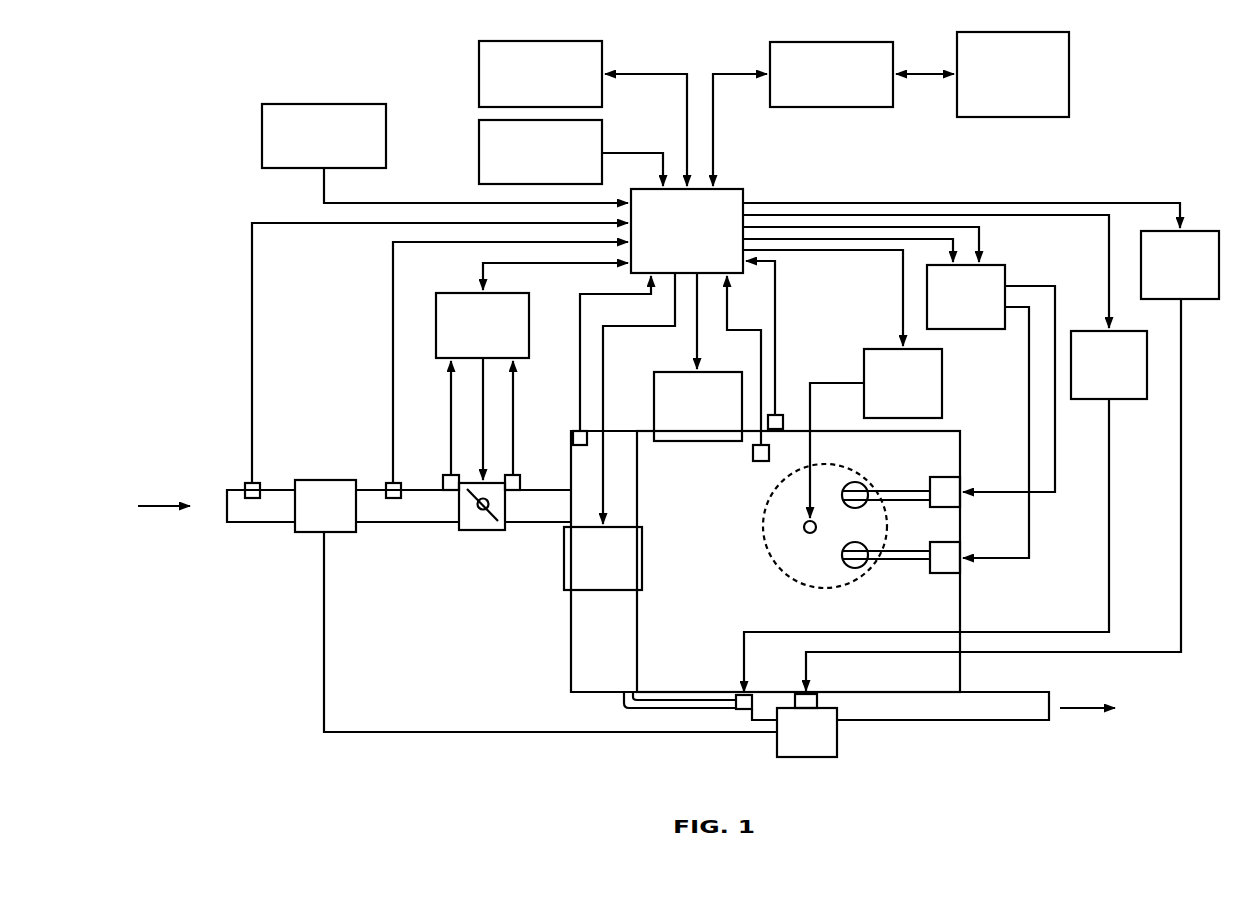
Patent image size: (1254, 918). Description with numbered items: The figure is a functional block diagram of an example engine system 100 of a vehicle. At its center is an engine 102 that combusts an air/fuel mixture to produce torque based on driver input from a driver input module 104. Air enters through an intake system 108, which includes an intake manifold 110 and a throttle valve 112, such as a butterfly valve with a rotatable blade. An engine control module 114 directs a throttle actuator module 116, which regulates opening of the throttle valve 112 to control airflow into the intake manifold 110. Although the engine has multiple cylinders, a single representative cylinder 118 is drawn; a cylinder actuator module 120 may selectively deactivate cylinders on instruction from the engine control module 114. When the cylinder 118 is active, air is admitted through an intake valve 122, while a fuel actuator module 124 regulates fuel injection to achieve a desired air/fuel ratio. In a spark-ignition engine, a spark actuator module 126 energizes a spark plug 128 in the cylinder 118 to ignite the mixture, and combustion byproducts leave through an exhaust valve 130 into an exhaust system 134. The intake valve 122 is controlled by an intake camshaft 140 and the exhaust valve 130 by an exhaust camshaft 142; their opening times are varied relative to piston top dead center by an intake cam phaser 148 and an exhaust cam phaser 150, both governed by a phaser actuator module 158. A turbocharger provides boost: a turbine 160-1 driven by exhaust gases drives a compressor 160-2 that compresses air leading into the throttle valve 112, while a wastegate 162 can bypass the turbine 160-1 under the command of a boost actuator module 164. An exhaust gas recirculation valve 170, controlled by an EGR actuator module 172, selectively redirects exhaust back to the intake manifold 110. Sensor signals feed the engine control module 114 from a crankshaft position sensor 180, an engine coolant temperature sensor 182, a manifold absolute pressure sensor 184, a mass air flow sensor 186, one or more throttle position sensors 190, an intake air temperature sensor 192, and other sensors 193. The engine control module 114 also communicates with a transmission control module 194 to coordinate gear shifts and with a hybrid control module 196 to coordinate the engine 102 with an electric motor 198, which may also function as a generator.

The engine system 100 is at (203, 99).
The engine 102 is at (960, 438).
The driver input module 104 is at (479, 152).
The intake system 108 is at (236, 562).
The intake manifold 110 is at (571, 637).
The throttle valve 112 is at (483, 530).
The engine control module 114 is at (743, 193).
The throttle actuator module 116 is at (460, 293).
The cylinder 118 is at (790, 582).
The cylinder actuator module 120 is at (700, 372).
The intake valve 122 is at (855, 483).
The fuel actuator module 124 is at (620, 590).
The spark actuator module 126 is at (942, 385).
The spark plug 128 is at (804, 527).
The exhaust valve 130 is at (862, 567).
The exhaust system 134 is at (1023, 724).
The intake camshaft 140 is at (905, 491).
The exhaust camshaft 142 is at (910, 559).
The intake cam phaser 148 is at (945, 477).
The exhaust cam phaser 150 is at (945, 573).
The phaser actuator module 158 is at (1005, 275).
The turbine 160-1 is at (837, 740).
The compressor 160-2 is at (324, 532).
The wastegate 162 is at (817, 700).
The boost actuator module 164 is at (1195, 299).
The exhaust gas recirculation valve 170 is at (744, 709).
The EGR actuator module 172 is at (1125, 399).
The crankshaft position sensor 180 is at (776, 415).
The engine coolant temperature sensor 182 is at (761, 461).
The manifold absolute pressure sensor 184 is at (578, 431).
The mass air flow sensor 186 is at (393, 483).
The throttle position sensors 190 is at (451, 490).
The intake air temperature sensor 192 is at (252, 483).
The other sensors 193 is at (322, 104).
The transmission control module 194 is at (479, 100).
The hybrid control module 196 is at (833, 107).
The electric motor 198 is at (1023, 117).